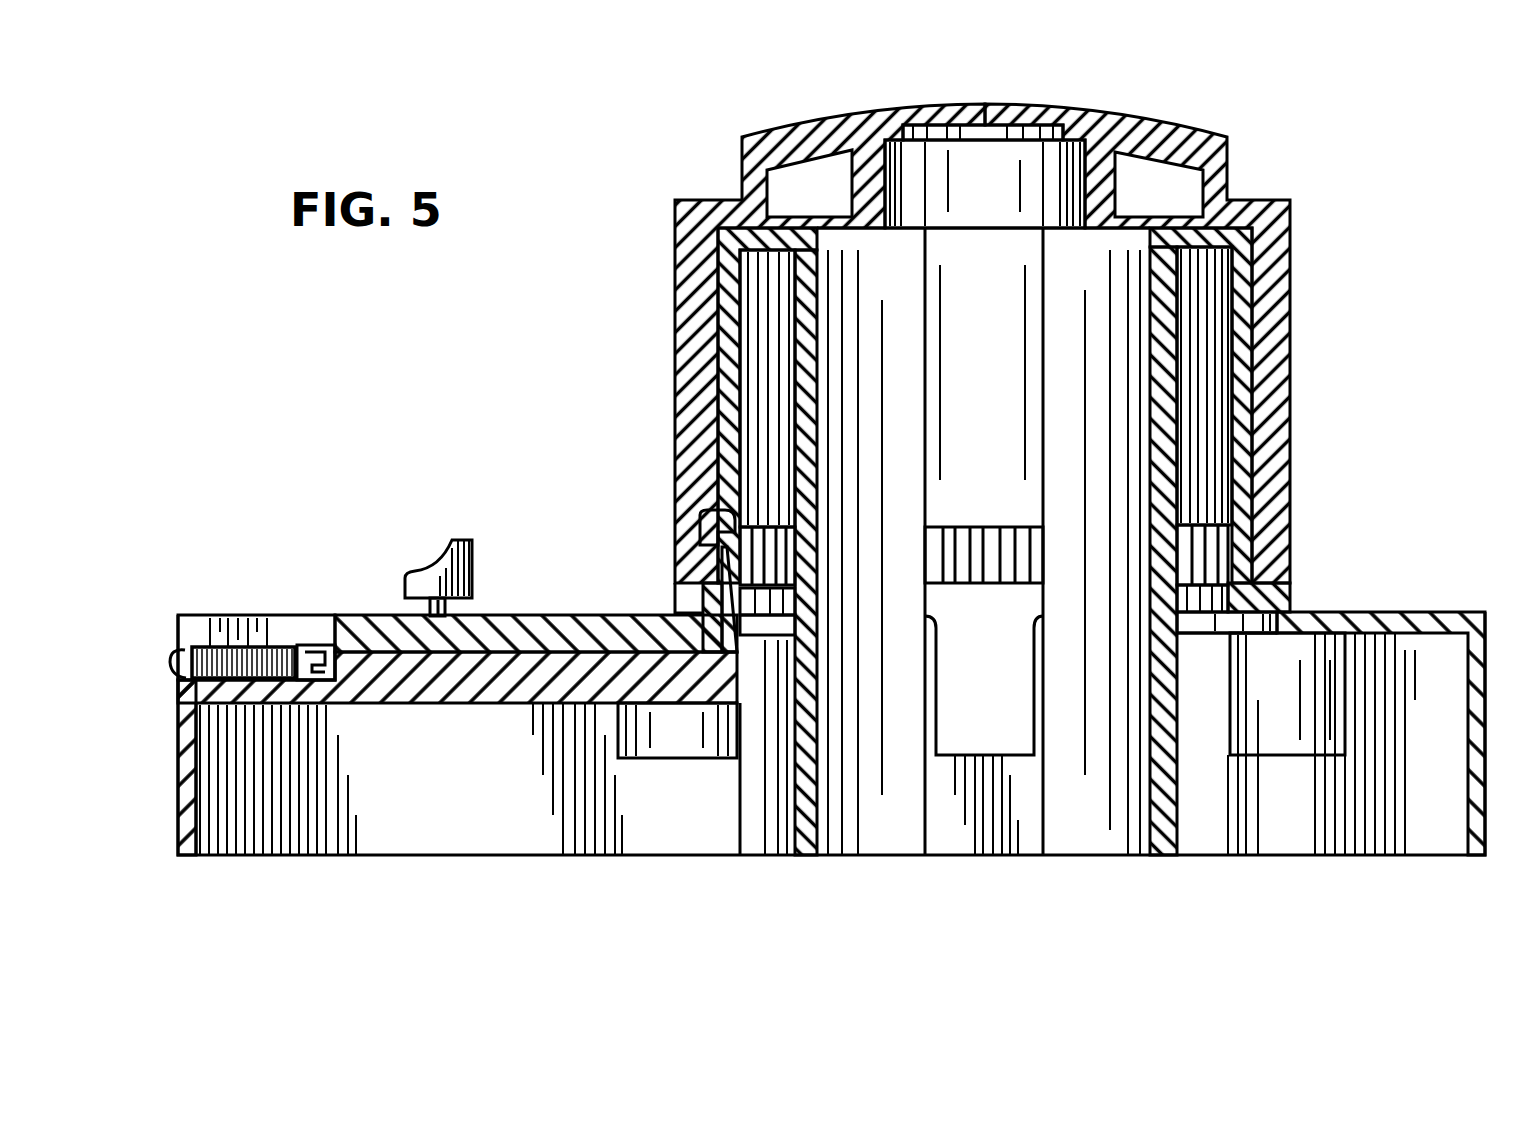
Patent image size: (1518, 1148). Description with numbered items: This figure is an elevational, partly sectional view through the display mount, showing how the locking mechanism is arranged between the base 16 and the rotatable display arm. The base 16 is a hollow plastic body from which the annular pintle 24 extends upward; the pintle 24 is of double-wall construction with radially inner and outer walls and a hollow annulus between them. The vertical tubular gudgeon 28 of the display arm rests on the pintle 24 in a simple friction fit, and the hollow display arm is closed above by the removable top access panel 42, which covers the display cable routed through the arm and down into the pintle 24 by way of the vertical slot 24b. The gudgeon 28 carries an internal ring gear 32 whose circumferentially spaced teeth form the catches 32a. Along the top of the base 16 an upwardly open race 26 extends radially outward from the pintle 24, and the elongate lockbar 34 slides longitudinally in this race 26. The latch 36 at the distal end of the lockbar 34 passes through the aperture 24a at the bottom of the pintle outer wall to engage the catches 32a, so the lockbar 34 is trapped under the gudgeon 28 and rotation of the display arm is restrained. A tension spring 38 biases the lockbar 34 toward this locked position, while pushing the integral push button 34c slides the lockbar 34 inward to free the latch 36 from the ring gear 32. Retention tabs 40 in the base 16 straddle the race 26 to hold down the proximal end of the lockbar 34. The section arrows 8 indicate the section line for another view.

The base 16 is at (458, 862).
The pintle 24 is at (795, 812).
The aperture 24a is at (735, 514).
The vertical slot 24b is at (1040, 342).
The race 26 is at (192, 615).
The gudgeon 28 is at (675, 366).
The internal ring gear 32 is at (1000, 583).
The catches 32a is at (1012, 540).
The lockbar 34 is at (542, 615).
The push button 34c is at (438, 570).
The latch 36 is at (703, 597).
The tension spring 38 is at (286, 640).
The retention tabs 40 is at (325, 615).
The top access panel 42 is at (978, 108).
The section line 8 is at (558, 572).